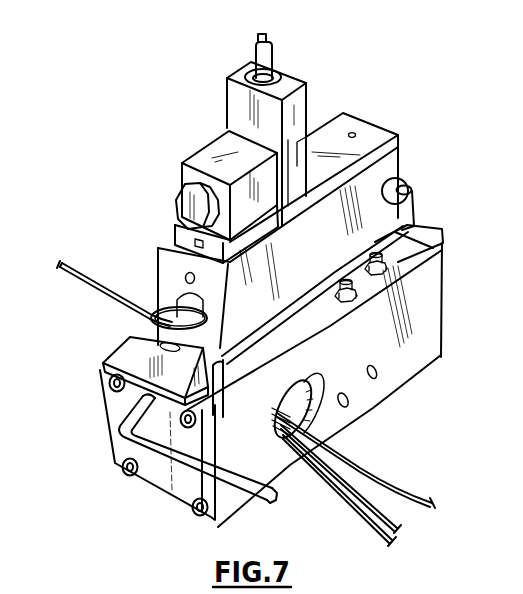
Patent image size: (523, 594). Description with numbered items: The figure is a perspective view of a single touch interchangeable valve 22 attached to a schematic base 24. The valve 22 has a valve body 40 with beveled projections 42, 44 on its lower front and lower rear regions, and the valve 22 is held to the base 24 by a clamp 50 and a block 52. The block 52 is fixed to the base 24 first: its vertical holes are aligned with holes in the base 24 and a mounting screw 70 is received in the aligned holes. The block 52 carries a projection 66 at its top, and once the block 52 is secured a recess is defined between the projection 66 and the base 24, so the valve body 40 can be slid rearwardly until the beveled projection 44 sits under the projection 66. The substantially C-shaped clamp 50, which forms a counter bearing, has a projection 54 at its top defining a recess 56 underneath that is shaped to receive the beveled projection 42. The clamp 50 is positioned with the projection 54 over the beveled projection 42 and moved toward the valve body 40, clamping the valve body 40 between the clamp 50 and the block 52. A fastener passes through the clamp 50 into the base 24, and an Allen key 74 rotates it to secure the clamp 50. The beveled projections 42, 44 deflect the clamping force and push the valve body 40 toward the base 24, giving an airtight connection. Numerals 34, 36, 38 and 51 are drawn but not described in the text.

The valve 22 is at (368, 135).
The base 24 is at (427, 325).
The valve block 34 is at (205, 160).
The adjustment knob 36 is at (183, 203).
The solenoid plunger 38 is at (265, 84).
The valve body 40 is at (387, 168).
The beveled projection 42 is at (232, 365).
The beveled projection 44 is at (400, 237).
The clamp 50 is at (137, 355).
The mounting plate 51 is at (140, 387).
The block 52 is at (420, 210).
The projection 54 is at (152, 332).
The recess 56 is at (223, 412).
The projection 66 is at (405, 173).
The mounting screw 70 is at (412, 190).
The Allen key 74 is at (157, 455).